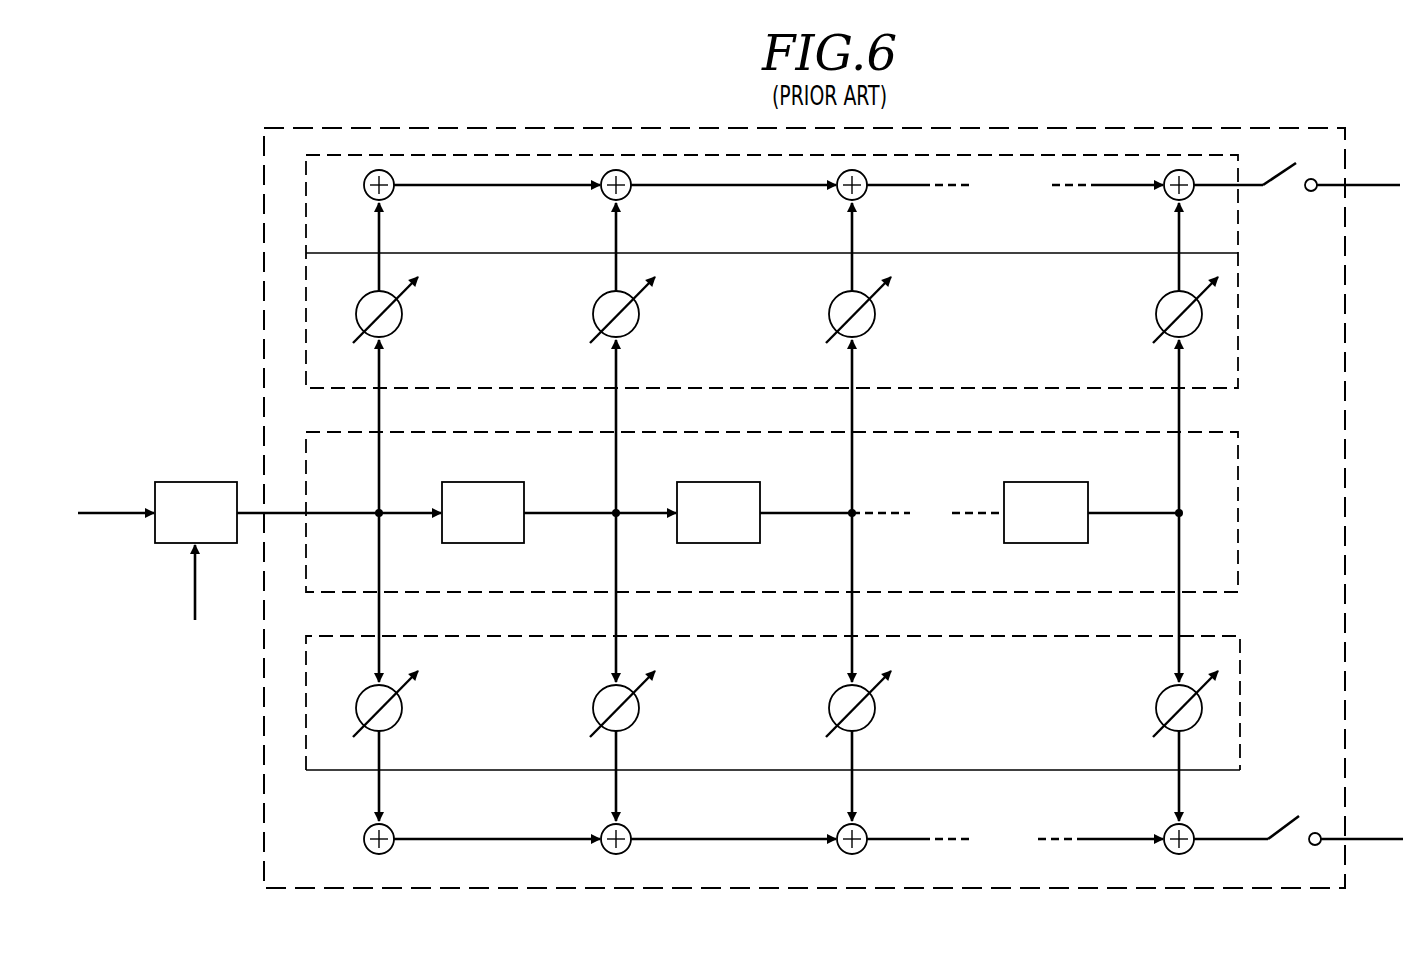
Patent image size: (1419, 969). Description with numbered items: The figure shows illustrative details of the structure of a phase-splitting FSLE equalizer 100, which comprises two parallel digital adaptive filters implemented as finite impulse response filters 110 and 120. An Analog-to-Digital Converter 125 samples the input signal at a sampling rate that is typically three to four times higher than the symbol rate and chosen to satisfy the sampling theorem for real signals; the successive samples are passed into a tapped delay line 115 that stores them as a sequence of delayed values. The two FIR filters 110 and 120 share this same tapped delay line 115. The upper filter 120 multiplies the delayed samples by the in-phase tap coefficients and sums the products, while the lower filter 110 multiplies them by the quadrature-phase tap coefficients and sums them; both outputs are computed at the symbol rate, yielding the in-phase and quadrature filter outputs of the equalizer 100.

The phase-splitting FSLE equalizer 100 is at (330, 128).
The FIR filter 110 is at (1240, 668).
The tapped delay line 115 is at (1238, 466).
The FIR filter 120 is at (1238, 290).
The Analog-to-Digital Converter 125 is at (195, 482).